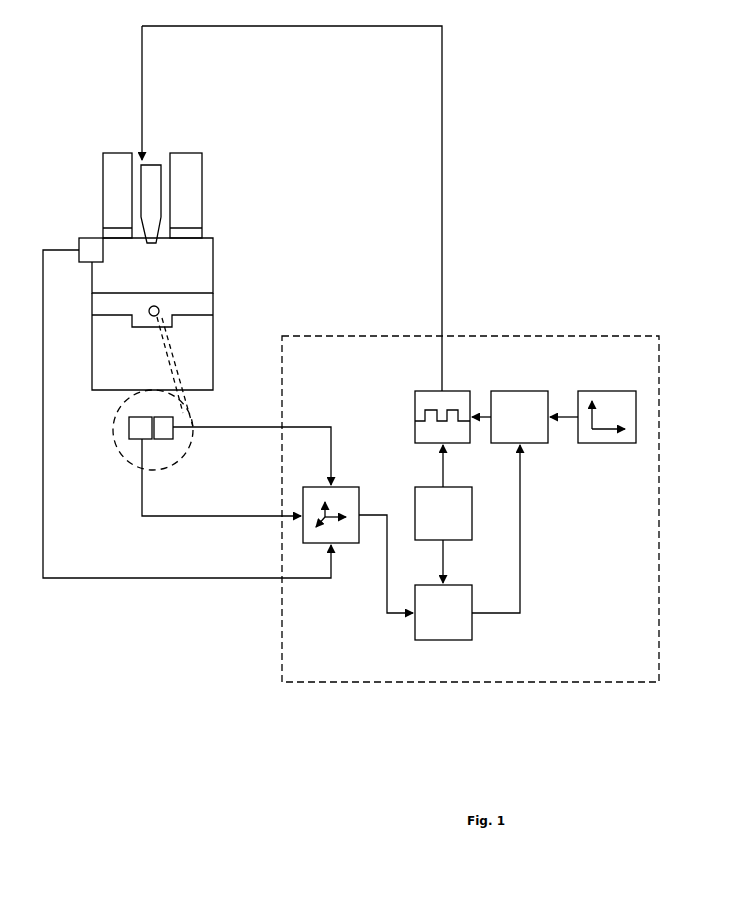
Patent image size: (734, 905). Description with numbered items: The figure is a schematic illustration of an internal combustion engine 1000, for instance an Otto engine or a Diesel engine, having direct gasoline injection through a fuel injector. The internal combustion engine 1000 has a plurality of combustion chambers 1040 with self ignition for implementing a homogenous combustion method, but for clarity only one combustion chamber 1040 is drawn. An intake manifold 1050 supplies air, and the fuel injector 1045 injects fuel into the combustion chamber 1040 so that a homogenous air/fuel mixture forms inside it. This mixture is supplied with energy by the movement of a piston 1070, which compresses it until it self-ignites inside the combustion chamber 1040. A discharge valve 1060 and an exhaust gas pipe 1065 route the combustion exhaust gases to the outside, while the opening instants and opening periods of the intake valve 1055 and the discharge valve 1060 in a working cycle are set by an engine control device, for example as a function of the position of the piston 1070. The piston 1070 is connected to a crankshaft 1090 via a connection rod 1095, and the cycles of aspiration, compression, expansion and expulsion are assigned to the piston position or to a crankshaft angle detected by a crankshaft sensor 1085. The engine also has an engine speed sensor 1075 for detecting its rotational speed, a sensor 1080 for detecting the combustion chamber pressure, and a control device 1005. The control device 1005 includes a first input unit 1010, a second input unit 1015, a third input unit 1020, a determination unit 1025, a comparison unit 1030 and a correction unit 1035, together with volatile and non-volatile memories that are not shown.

The internal combustion engine 1000 is at (514, 180).
The control device 1005 is at (648, 648).
The first input unit 1010 is at (603, 398).
The second input unit 1015 is at (460, 518).
The third input unit 1020 is at (437, 398).
The determination unit 1025 is at (347, 528).
The comparison unit 1030 is at (472, 628).
The correction unit 1035 is at (533, 398).
The combustion chamber 1040 is at (203, 322).
The fuel injector 1045 is at (152, 198).
The intake manifold 1050 is at (195, 203).
The intake valve 1055 is at (195, 233).
The discharge valve 1060 is at (105, 233).
The exhaust gas pipe 1065 is at (112, 165).
The piston 1070 is at (102, 304).
The engine speed sensor 1075 is at (132, 432).
The sensor 1080 is at (85, 250).
The crankshaft sensor 1085 is at (174, 432).
The crankshaft 1090 is at (125, 416).
The connection rod 1095 is at (158, 334).